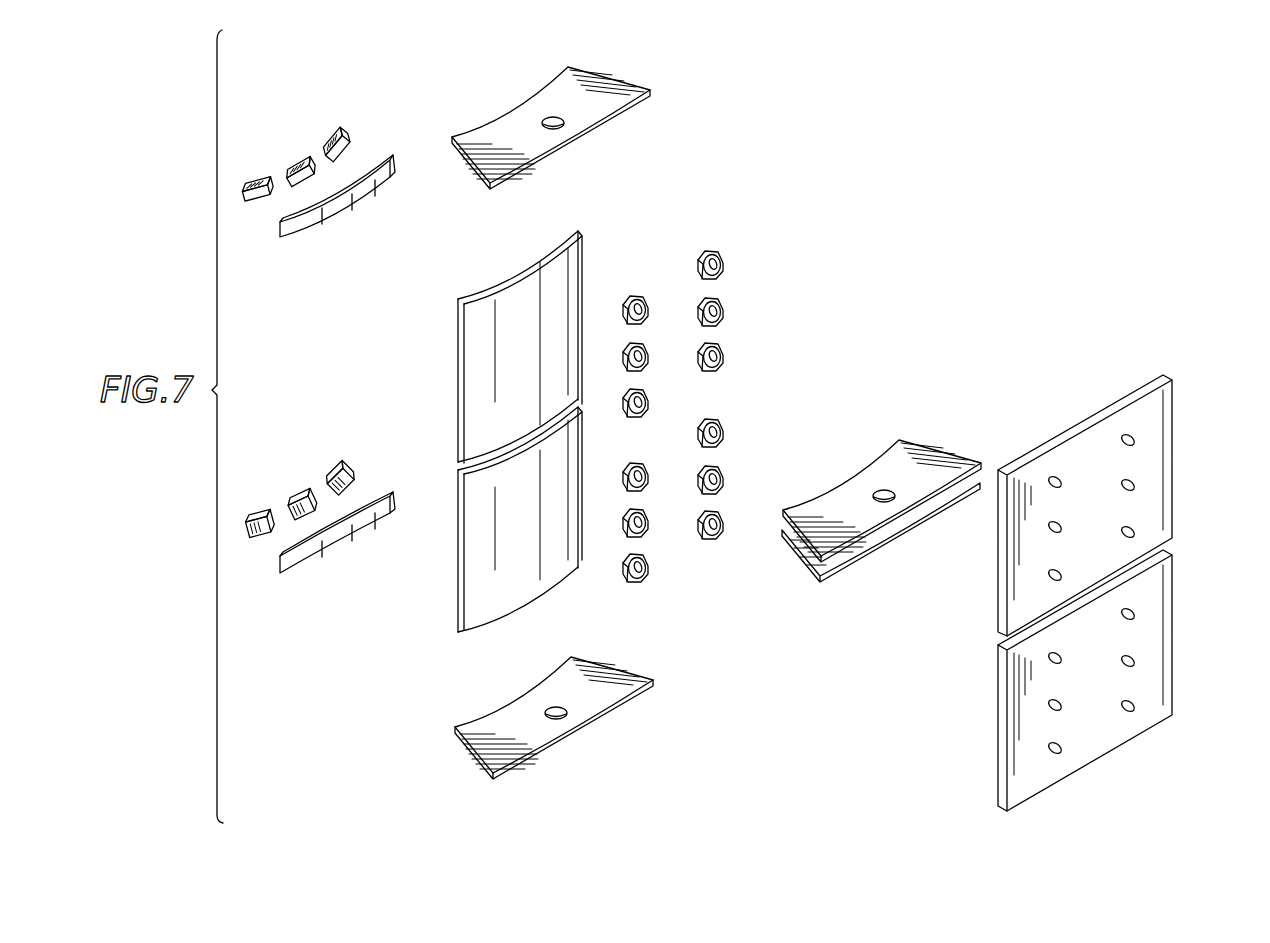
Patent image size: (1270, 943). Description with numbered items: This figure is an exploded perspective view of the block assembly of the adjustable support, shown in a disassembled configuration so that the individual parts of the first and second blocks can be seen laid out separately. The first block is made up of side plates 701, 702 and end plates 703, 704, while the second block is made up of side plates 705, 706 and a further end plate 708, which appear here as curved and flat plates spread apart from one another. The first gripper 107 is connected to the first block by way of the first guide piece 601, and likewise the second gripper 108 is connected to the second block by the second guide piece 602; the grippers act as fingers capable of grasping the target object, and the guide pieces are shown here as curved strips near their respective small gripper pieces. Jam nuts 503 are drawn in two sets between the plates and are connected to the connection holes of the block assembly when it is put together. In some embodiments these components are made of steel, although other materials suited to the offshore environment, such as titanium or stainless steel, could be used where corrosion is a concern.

The first gripper 107 is at (343, 133).
The first guide piece 601 is at (325, 217).
The end plate 703 is at (602, 88).
The side plate 701 is at (510, 300).
The side plate 705 is at (473, 592).
The jam nuts 503 is at (722, 355).
The second gripper 108 is at (309, 492).
The second guide piece 602 is at (328, 555).
The end plate 708 is at (598, 692).
The end plate 704 is at (838, 503).
The side plate 702 is at (1162, 447).
The side plate 706 is at (1165, 632).